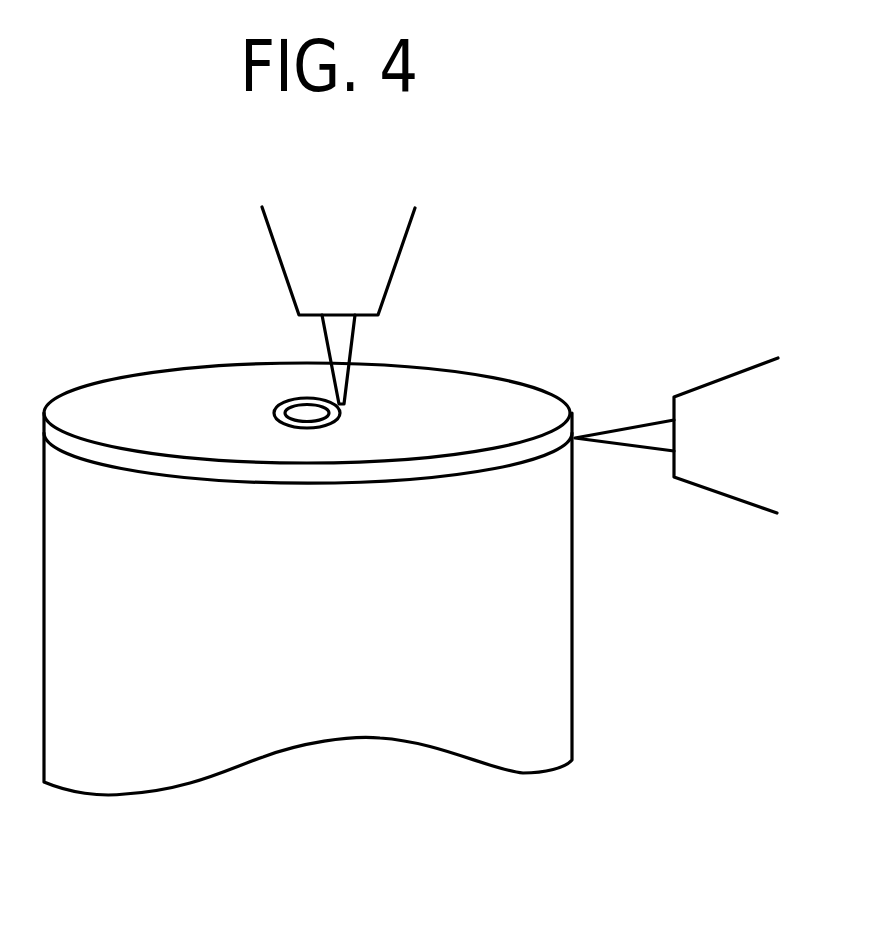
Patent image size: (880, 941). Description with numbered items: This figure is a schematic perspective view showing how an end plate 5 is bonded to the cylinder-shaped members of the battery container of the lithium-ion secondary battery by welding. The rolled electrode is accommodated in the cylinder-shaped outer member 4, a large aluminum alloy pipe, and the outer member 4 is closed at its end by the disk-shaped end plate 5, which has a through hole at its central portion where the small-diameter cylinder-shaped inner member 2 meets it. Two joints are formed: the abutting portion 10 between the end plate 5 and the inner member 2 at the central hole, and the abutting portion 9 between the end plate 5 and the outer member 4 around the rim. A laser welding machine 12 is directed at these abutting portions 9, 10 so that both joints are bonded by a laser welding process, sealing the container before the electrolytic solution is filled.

The cylinder-shaped inner member 2 is at (300, 398).
The cylinder-shaped outer member 4 is at (523, 640).
The end plate 5 is at (443, 402).
The abutting portion between end plate and outer member 9 is at (508, 470).
The abutting portion between end plate and inner member 10 is at (273, 416).
The laser welding machine 12 is at (375, 207).